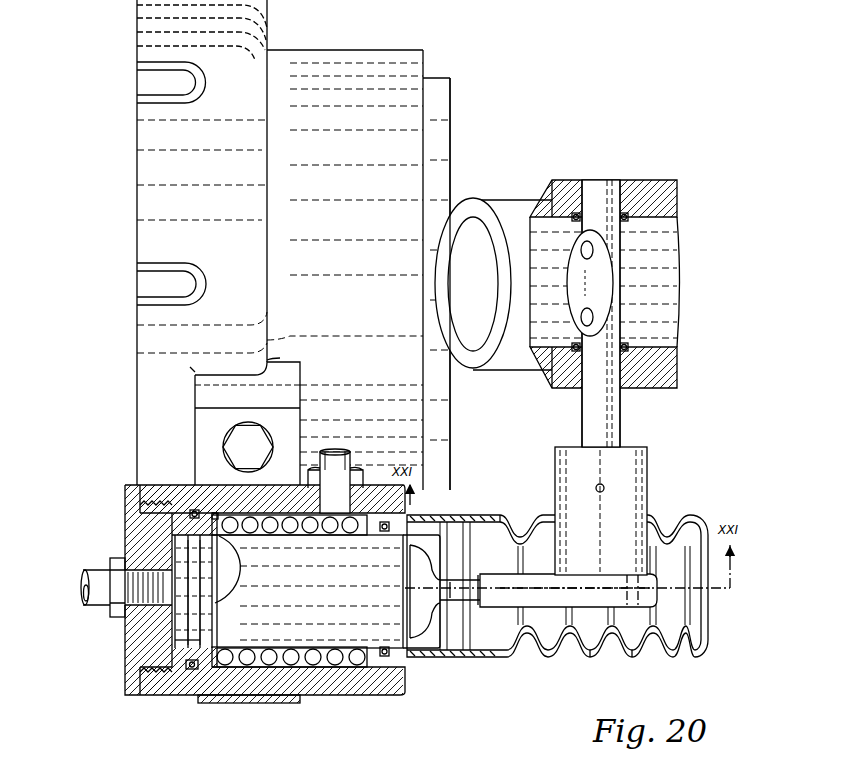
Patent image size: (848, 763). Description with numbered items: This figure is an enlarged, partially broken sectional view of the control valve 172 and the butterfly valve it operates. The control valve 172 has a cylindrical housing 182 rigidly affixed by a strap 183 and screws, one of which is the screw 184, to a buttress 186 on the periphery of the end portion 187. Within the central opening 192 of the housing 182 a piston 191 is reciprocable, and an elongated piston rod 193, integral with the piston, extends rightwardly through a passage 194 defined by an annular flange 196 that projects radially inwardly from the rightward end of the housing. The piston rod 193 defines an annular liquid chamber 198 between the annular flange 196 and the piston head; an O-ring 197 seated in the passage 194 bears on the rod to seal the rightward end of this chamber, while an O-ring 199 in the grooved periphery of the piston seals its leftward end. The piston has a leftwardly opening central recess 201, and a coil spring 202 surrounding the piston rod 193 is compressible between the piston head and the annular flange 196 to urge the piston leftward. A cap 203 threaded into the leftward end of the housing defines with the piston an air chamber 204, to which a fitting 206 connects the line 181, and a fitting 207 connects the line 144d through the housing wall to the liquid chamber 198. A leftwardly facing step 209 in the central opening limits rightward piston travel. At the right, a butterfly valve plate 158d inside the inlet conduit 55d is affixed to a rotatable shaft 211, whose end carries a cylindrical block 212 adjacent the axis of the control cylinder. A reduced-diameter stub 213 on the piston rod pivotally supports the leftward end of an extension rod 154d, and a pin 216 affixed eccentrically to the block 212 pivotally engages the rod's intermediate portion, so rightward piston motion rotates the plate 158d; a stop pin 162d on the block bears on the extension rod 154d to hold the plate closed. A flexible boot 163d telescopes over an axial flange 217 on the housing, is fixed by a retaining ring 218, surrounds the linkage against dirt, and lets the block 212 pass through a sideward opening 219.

The end portion 187 is at (315, 66).
The buttress 186 is at (282, 378).
The screw 184 is at (262, 444).
The line 144d is at (330, 458).
The fitting 207 is at (354, 478).
The O-ring 199 is at (189, 512).
The step 209 is at (217, 492).
The cap 203 is at (128, 525).
The air chamber 204 is at (168, 538).
The line 181 is at (100, 600).
The fitting 206 is at (122, 618).
The piston 191 is at (180, 641).
The central opening 192 is at (188, 668).
The annular liquid chamber 198 is at (235, 664).
The strap 183 is at (293, 702).
The cylindrical housing 182 is at (358, 690).
The annular flange 196 is at (383, 660).
The O-ring 197 is at (390, 660).
The control valve 172 is at (418, 707).
The central recess 201 is at (226, 568).
The piston rod 193 is at (310, 591).
The coil spring 202 is at (258, 650).
The passage 194 is at (410, 636).
The retaining ring 218 is at (418, 528).
The sideward opening 219 is at (556, 522).
The stub 213 is at (462, 578).
The extension rod 154d is at (500, 598).
The shaft 211 is at (614, 428).
The cylindrical block 212 is at (643, 487).
The inlet conduit 55d is at (650, 192).
The butterfly valve plate 158d is at (608, 293).
The flexible boot 163d is at (710, 640).
The pin 216 is at (579, 618).
The stop pin 162d is at (627, 622).
The axial flange 217 is at (428, 657).